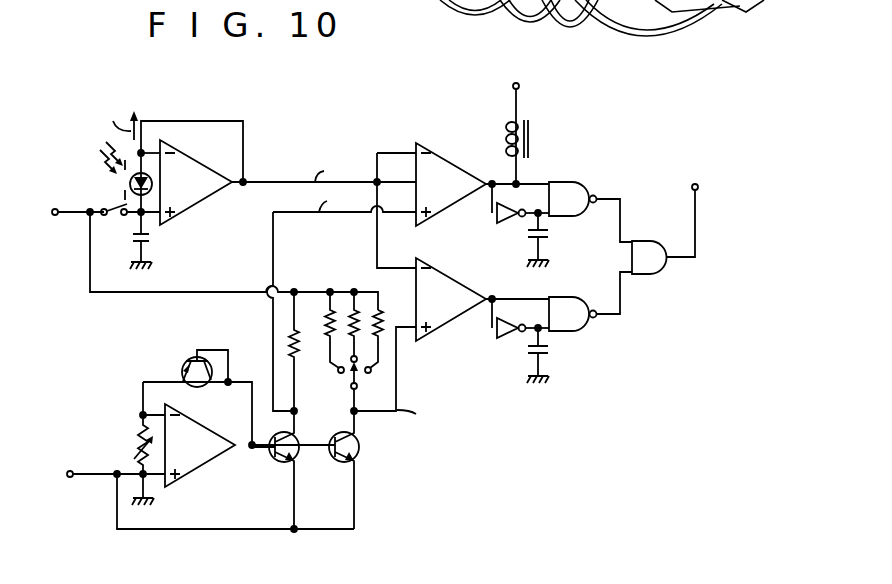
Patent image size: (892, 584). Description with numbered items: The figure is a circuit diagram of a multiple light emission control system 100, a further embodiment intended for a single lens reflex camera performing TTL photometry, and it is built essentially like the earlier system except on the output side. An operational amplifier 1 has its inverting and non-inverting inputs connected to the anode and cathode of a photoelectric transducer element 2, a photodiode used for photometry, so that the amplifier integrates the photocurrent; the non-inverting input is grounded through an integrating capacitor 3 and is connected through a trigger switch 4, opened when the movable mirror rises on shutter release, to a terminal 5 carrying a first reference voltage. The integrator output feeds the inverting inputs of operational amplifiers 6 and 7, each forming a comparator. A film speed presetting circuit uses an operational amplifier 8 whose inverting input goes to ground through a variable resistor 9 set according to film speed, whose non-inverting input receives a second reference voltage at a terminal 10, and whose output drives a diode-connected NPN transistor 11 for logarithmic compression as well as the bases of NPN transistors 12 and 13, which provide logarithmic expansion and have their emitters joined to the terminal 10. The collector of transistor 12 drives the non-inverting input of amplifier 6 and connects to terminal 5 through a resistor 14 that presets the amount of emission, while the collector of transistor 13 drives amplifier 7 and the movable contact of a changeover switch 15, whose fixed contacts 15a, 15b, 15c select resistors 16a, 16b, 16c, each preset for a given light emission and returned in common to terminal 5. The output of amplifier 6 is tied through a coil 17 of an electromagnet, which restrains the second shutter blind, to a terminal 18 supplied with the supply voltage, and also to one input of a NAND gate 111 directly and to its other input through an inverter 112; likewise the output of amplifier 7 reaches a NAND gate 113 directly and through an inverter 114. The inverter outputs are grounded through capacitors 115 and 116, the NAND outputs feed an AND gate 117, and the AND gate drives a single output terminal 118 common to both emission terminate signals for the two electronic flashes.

The operational amplifier 1 is at (194, 165).
The photoelectric transducer element 2 is at (153, 184).
The integrating capacitor 3 is at (149, 241).
The trigger switch 4 is at (106, 215).
The terminal 5 is at (55, 216).
The operational amplifier 6 is at (443, 170).
The operational amplifier 7 is at (442, 284).
The operational amplifier 8 is at (210, 447).
The variable resistor 9 is at (140, 433).
The terminal 10 is at (72, 478).
The NPN transistor 11 is at (188, 362).
The NPN transistor 12 is at (295, 461).
The NPN transistor 13 is at (355, 461).
The resistor 14 is at (296, 337).
The changeover switch 15 is at (366, 384).
The fixed contact 15a is at (372, 371).
The fixed contact 15b is at (358, 358).
The fixed contact 15c is at (338, 372).
The resistor 16a is at (392, 306).
The resistor 16b is at (367, 285).
The resistor 16c is at (336, 300).
The coil 17 is at (527, 127).
The terminal 18 is at (513, 89).
The control system 100 is at (322, 140).
The NAND gate 111 is at (563, 183).
The inverter 112 is at (499, 223).
The NAND gate 113 is at (563, 299).
The inverter 114 is at (498, 336).
The capacitor 115 is at (549, 234).
The capacitor 116 is at (549, 350).
The AND gate 117 is at (633, 275).
The output terminal 118 is at (693, 190).